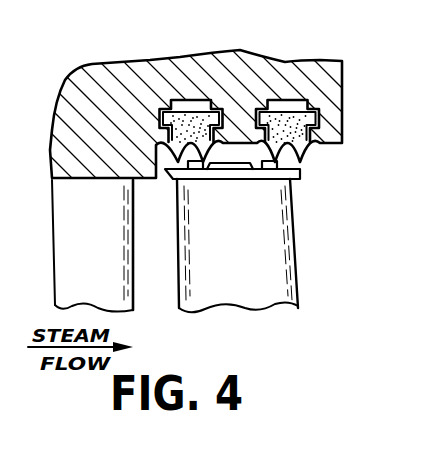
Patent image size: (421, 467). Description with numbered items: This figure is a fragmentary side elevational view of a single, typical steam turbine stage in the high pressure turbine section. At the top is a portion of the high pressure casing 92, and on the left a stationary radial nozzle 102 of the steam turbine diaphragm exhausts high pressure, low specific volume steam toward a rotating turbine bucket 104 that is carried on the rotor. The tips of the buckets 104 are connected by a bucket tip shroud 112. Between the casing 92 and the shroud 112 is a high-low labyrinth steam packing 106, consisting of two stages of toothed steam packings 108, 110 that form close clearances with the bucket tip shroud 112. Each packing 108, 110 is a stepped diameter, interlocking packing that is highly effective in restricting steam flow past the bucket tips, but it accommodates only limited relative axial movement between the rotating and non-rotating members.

The high pressure casing 92 is at (179, 68).
The stationary radial nozzle 102 is at (70, 258).
The rotating turbine bucket 104 is at (287, 277).
The high-low labyrinth steam packing 106 is at (326, 173).
The toothed steam packing 108 is at (193, 120).
The toothed steam packing 110 is at (287, 118).
The bucket tip shroud 112 is at (248, 176).